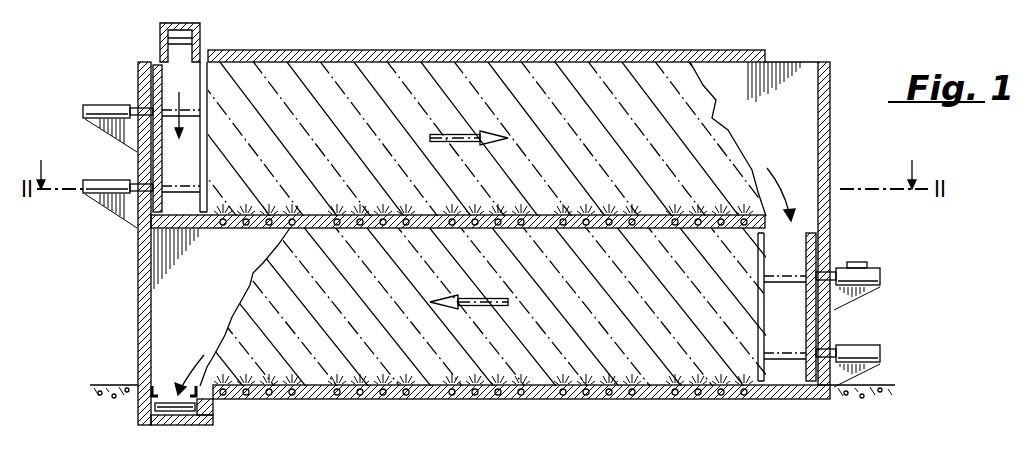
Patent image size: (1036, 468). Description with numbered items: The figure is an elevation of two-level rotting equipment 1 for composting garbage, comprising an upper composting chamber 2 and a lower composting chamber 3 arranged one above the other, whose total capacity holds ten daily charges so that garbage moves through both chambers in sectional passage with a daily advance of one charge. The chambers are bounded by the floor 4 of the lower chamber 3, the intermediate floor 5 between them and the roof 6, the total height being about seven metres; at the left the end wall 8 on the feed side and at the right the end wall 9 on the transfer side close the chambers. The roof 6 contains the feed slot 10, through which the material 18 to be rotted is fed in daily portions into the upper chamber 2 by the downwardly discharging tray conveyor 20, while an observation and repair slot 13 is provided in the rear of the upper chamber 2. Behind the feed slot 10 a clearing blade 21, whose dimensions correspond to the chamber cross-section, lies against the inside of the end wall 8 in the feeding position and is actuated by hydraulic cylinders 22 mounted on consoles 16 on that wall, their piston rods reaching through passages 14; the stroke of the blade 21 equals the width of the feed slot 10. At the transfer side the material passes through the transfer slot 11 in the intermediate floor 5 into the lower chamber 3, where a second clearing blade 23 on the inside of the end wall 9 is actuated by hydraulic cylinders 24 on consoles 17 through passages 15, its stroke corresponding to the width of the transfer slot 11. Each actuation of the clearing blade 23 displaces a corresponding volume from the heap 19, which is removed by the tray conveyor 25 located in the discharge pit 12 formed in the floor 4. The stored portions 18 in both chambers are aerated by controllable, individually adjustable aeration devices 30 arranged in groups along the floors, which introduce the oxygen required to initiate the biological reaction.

The equipment 1 is at (458, 38).
The upper composting chamber 2 is at (445, 116).
The lower composting chamber 3 is at (449, 277).
The floor 4 is at (526, 400).
The intermediate floor 5 is at (534, 229).
The roof 6 is at (540, 62).
The end wall on the feed side 8 is at (138, 296).
The end wall on the transfer side 9 is at (830, 150).
The feed slot 10 is at (180, 68).
The transfer slot 11 is at (757, 242).
The discharge pit 12 is at (166, 425).
The observation and repair slot 13 is at (801, 59).
The passages 14 is at (138, 98).
The passages 15 is at (818, 262).
The consoles 16 is at (118, 136).
The consoles 17 is at (858, 298).
The material to be decomposed or rotted 18 is at (198, 120).
The heap 19 is at (735, 132).
The tray conveyor 20 is at (160, 34).
The clearing blade 21 is at (162, 166).
The hydraulic cylinders 22 is at (85, 107).
The clearing blade 23 is at (806, 320).
The hydraulic cylinders 24 is at (882, 278).
The tray conveyor 25 is at (192, 412).
The aeration devices 30 is at (223, 400).